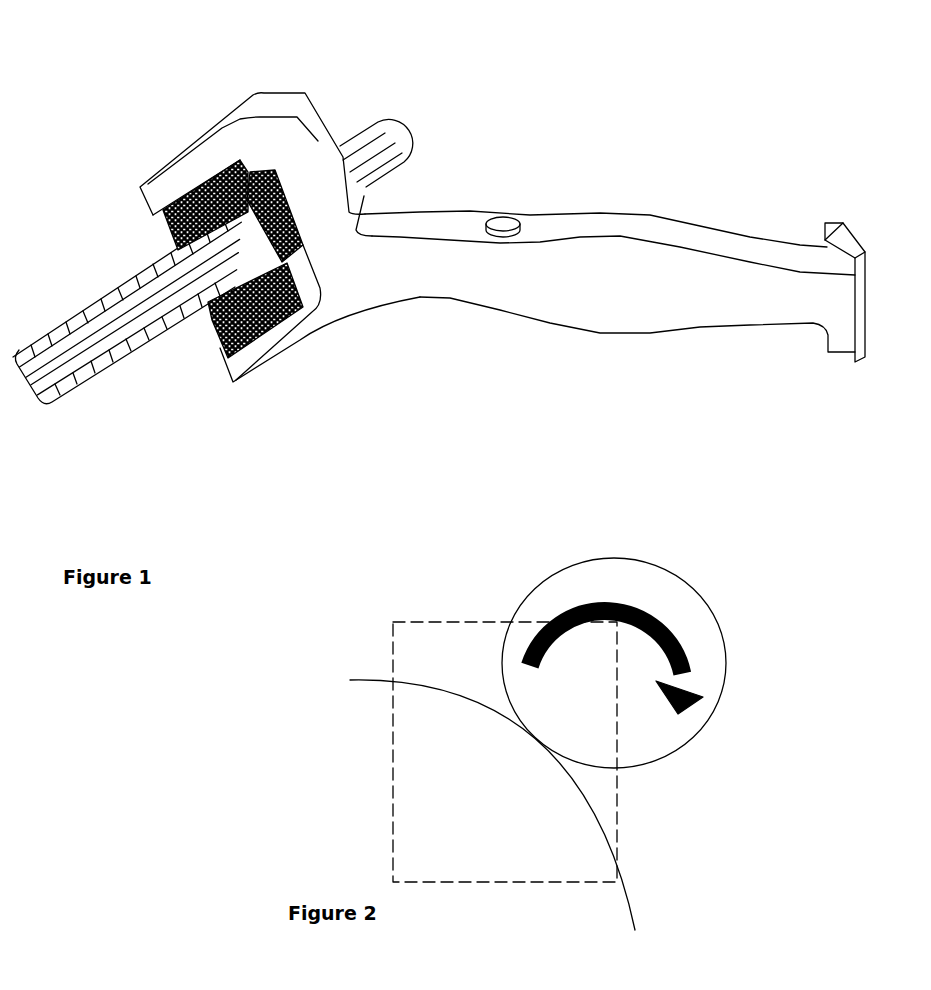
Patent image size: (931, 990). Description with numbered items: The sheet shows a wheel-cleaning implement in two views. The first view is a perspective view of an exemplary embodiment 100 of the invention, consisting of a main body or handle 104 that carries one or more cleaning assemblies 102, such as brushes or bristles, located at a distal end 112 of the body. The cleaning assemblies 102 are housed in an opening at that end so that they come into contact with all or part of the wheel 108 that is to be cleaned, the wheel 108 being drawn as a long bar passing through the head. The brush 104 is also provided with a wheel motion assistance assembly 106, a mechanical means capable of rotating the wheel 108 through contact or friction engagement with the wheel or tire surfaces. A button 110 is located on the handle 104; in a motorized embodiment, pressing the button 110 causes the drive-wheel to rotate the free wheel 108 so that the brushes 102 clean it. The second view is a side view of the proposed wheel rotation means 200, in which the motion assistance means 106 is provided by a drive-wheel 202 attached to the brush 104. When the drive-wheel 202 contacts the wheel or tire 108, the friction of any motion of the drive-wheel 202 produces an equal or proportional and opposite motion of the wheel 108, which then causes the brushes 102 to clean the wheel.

In FIG. 1, the exemplary embodiment 100 is at (625, 115).
In FIG. 1, the cleaning assemblies 102 is at (202, 202).
In FIG. 1, the handle 104 is at (675, 263).
In FIG. 2, the handle 104 is at (462, 620).
In FIG. 1, the wheel motion assistance assembly 106 is at (418, 122).
In FIG. 2, the wheel motion assistance assembly 106 is at (712, 533).
In FIG. 1, the wheel 108 is at (95, 302).
In FIG. 2, the wheel 108 is at (638, 893).
In FIG. 1, the button 110 is at (510, 223).
In FIG. 1, the distal end 112 is at (207, 158).
In FIG. 2, the rotation diagram 200 is at (318, 770).
In FIG. 2, the drive-wheel 202 is at (688, 598).